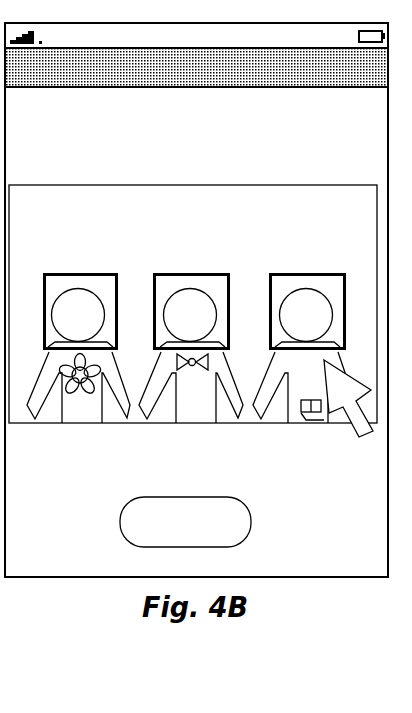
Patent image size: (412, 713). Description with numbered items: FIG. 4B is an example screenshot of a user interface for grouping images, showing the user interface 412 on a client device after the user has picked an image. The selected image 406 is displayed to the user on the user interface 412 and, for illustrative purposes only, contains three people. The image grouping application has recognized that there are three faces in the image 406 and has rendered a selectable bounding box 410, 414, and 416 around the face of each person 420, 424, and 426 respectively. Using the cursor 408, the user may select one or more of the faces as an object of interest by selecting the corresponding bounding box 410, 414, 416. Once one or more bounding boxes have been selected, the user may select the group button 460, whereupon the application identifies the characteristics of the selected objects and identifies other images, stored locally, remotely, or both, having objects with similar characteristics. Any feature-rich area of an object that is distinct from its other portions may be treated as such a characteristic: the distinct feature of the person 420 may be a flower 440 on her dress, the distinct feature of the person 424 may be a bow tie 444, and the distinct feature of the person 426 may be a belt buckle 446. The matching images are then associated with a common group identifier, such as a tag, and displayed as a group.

The image 406 is at (25, 424).
The cursor 408 is at (354, 438).
The bounding box 410 is at (85, 274).
The user interface 412 is at (308, 578).
The bounding box 414 is at (198, 274).
The bounding box 416 is at (307, 274).
The person 420 is at (75, 313).
The person 424 is at (190, 310).
The person 426 is at (308, 310).
The flower 440 is at (67, 390).
The bow tie 444 is at (191, 367).
The belt buckle 446 is at (302, 421).
The group button 460 is at (232, 547).